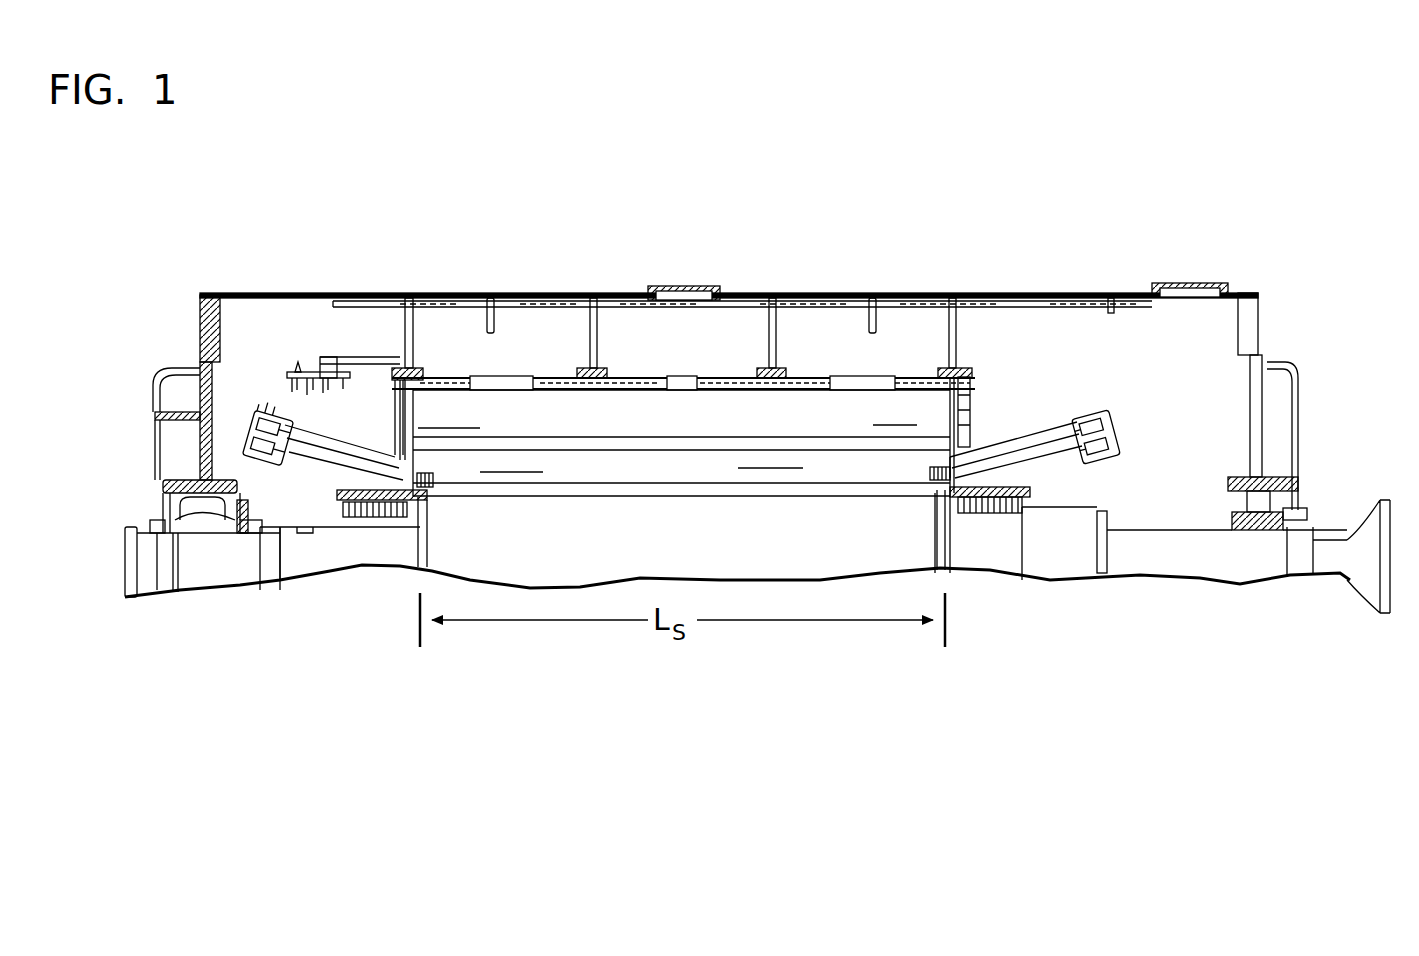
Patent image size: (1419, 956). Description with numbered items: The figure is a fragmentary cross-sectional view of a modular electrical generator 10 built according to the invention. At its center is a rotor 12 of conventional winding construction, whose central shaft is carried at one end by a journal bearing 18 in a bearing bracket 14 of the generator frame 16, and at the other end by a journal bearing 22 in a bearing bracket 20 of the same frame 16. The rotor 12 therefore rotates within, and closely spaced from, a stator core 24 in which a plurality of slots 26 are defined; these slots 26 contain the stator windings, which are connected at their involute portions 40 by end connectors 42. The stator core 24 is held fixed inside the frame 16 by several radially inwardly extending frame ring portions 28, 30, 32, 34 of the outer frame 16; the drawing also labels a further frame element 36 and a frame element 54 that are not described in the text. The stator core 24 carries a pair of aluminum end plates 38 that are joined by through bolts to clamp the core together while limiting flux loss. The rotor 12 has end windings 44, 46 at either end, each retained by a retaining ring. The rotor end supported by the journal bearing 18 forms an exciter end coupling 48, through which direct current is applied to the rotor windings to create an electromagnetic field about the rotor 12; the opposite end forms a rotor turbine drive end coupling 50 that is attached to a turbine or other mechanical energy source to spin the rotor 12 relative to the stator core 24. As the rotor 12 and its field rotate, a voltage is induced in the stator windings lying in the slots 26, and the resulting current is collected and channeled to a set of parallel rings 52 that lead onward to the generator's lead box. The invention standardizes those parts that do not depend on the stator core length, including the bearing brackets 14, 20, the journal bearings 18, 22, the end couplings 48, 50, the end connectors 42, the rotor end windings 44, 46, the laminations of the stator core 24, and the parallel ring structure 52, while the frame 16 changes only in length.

The modular electrical generator 10 is at (1107, 185).
The rotor 12 is at (503, 570).
The bearing bracket 14 is at (168, 412).
The generator frame 16 is at (832, 290).
The journal bearing 18 is at (170, 500).
The bearing bracket 20 is at (1258, 437).
The journal bearing 22 is at (1257, 528).
The stator core 24 is at (728, 413).
The slots 26 is at (630, 465).
The frame ring portion 28 is at (407, 300).
The frame ring portion 30 is at (600, 292).
The frame ring portion 32 is at (793, 305).
The frame ring portion 34 is at (930, 305).
The short post 36 is at (497, 318).
The end plates 38 is at (975, 390).
The involute portions 40 is at (1063, 415).
The end connectors 42 is at (1117, 418).
The end winding 44 is at (375, 517).
The end winding 46 is at (1000, 513).
The exciter end coupling 48 is at (140, 527).
The rotor turbine drive end coupling 50 is at (1380, 538).
The parallel rings 52 is at (300, 352).
The cap 54 is at (688, 288).